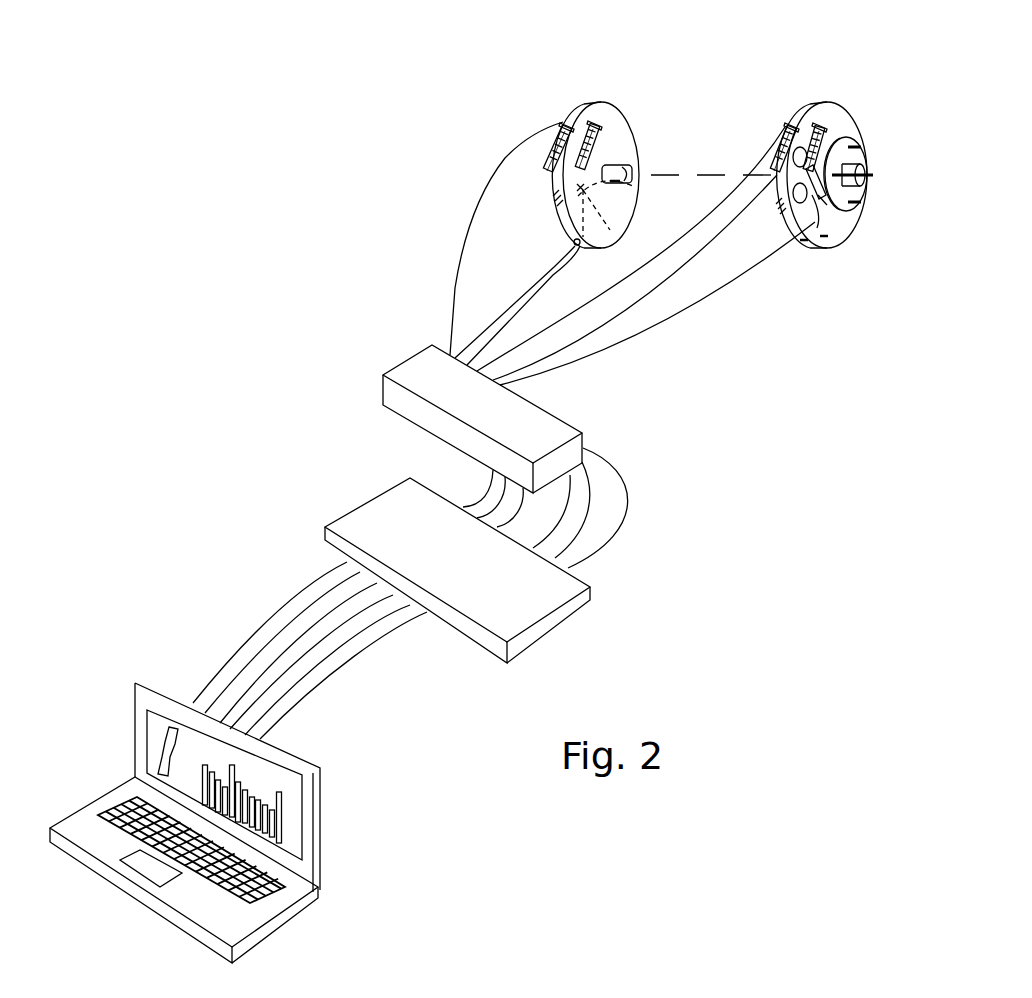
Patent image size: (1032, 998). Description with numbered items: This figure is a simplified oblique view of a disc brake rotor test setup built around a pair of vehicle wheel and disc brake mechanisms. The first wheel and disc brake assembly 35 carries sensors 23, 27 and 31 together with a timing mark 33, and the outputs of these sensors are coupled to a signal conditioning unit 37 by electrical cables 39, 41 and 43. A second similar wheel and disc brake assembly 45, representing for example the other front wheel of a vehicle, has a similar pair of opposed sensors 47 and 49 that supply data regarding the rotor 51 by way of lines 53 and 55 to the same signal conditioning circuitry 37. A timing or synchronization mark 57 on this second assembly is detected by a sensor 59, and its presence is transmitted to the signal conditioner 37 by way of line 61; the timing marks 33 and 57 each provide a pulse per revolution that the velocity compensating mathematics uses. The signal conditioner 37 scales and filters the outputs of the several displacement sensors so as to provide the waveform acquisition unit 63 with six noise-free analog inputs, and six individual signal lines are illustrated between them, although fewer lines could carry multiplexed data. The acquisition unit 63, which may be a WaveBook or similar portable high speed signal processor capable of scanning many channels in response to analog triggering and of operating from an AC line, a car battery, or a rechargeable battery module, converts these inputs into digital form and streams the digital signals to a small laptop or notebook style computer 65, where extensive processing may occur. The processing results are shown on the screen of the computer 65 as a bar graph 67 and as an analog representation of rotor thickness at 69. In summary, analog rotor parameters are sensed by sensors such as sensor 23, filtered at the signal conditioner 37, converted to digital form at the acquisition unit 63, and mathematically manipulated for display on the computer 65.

The sensor 23 is at (820, 127).
The sensor 27 is at (789, 127).
The sensor 31 is at (810, 215).
The timing mark 33 is at (828, 210).
The wheel and disc brake assembly 35 is at (812, 155).
The signal conditioning unit 37 is at (427, 413).
The electrical cable 39 is at (590, 313).
The electrical cable 41 is at (610, 327).
The electrical cable 43 is at (737, 288).
The second wheel and disc brake assembly 45 is at (566, 165).
The sensor 47 is at (612, 146).
The sensor 49 is at (560, 128).
The rotor 51 is at (623, 128).
The line 53 is at (523, 284).
The line 55 is at (455, 197).
The timing or synchronization mark 57 is at (612, 227).
The sensor 59 is at (633, 186).
The line 61 is at (558, 272).
The waveform acquisition unit 63 is at (410, 515).
The laptop computer 65 is at (205, 823).
The bar graph 67 is at (280, 807).
The analog representation of rotor thickness 69 is at (170, 728).